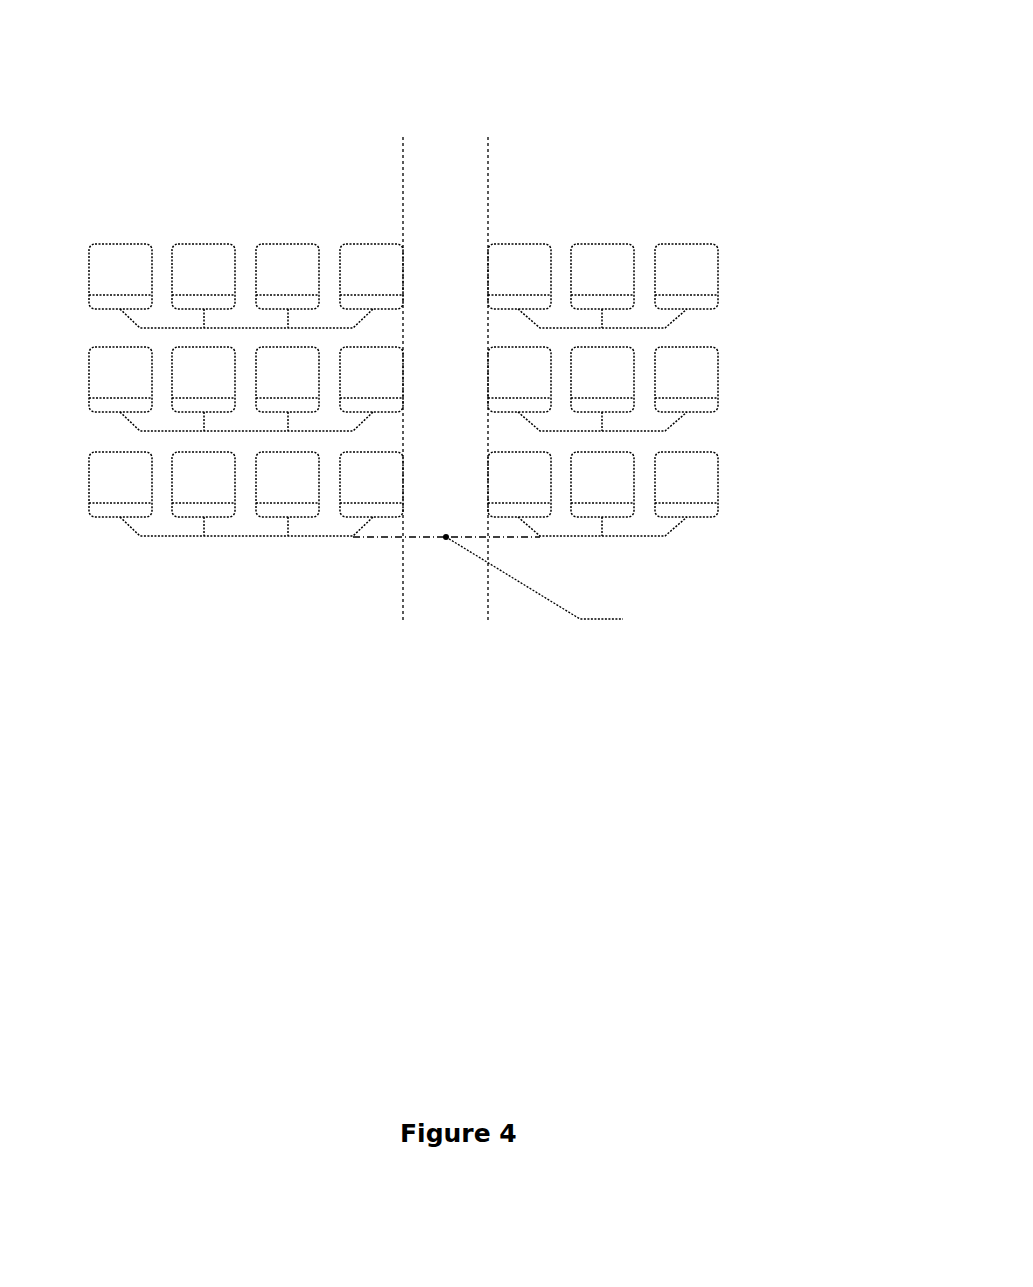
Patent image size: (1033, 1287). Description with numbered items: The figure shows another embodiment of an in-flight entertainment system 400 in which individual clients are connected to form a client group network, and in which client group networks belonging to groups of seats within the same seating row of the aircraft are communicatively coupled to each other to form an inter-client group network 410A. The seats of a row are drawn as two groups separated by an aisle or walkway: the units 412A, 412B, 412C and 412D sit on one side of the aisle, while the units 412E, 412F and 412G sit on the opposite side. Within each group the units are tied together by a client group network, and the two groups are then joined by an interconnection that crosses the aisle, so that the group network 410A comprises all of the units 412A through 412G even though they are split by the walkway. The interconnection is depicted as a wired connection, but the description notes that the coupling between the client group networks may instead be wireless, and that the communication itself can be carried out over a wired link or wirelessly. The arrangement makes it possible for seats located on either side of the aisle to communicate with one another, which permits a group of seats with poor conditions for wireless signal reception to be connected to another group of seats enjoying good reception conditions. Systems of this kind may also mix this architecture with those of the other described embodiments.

The in-flight entertainment system 400 is at (793, 58).
The inter-client group network 410A is at (671, 524).
The unit 412A is at (107, 520).
The unit 412B is at (190, 520).
The unit 412C is at (272, 520).
The unit 412D is at (350, 520).
The unit 412E is at (537, 518).
The unit 412F is at (622, 518).
The unit 412G is at (713, 518).